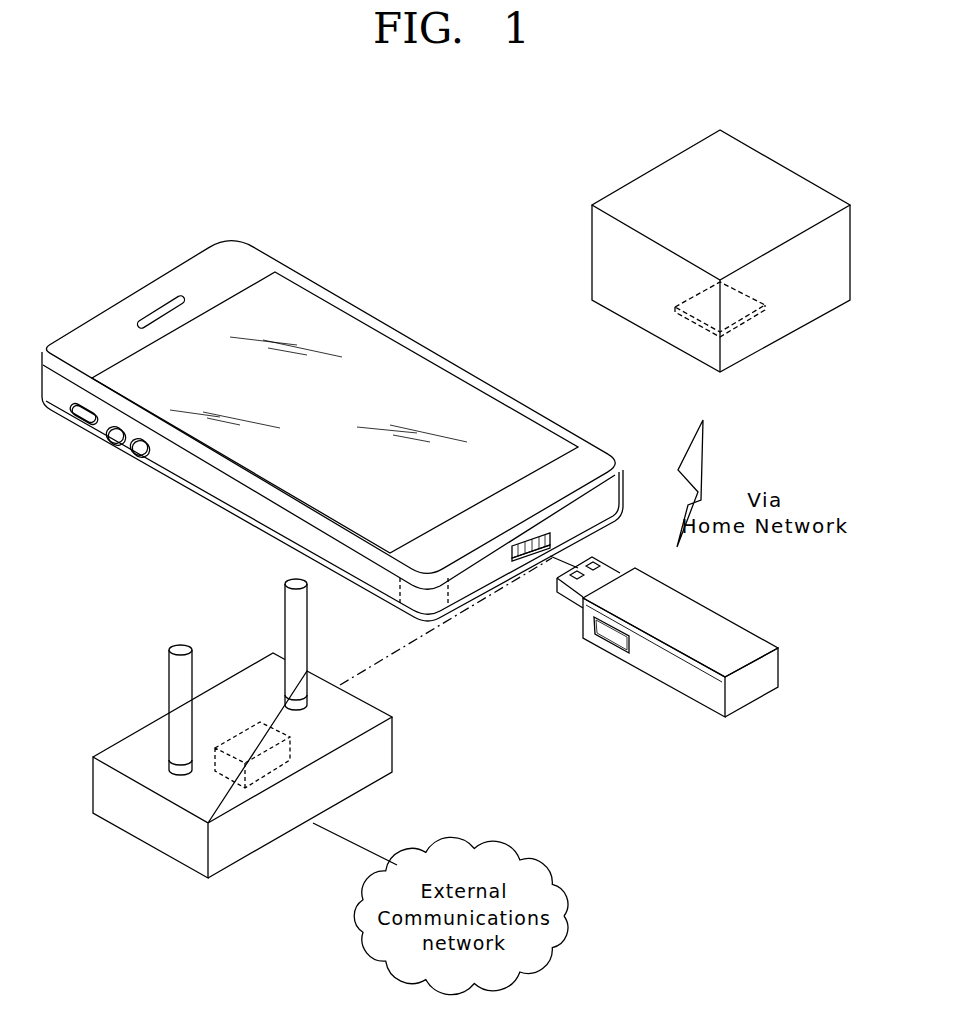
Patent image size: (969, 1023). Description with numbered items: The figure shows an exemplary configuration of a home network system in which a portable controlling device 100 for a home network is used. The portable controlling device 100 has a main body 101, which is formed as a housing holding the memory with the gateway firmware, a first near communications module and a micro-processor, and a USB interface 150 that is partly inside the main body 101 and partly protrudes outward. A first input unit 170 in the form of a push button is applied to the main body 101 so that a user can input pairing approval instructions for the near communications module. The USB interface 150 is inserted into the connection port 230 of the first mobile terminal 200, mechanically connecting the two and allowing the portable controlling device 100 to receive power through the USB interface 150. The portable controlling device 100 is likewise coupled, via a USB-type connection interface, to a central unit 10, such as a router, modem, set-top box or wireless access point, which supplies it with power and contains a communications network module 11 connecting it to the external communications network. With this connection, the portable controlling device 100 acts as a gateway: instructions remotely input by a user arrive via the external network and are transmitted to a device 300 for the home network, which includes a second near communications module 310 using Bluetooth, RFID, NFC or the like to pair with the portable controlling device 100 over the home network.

The central unit 10 is at (173, 840).
The communications network module 11 is at (250, 728).
The portable controlling device 100 is at (628, 707).
The main body 101 is at (692, 685).
The USB interface 150 is at (564, 596).
The first input unit 170 is at (607, 640).
The first mobile terminal 200 is at (208, 236).
The connection port 230 is at (522, 570).
The device for home network 300 is at (655, 146).
The second near communications module 310 is at (740, 323).